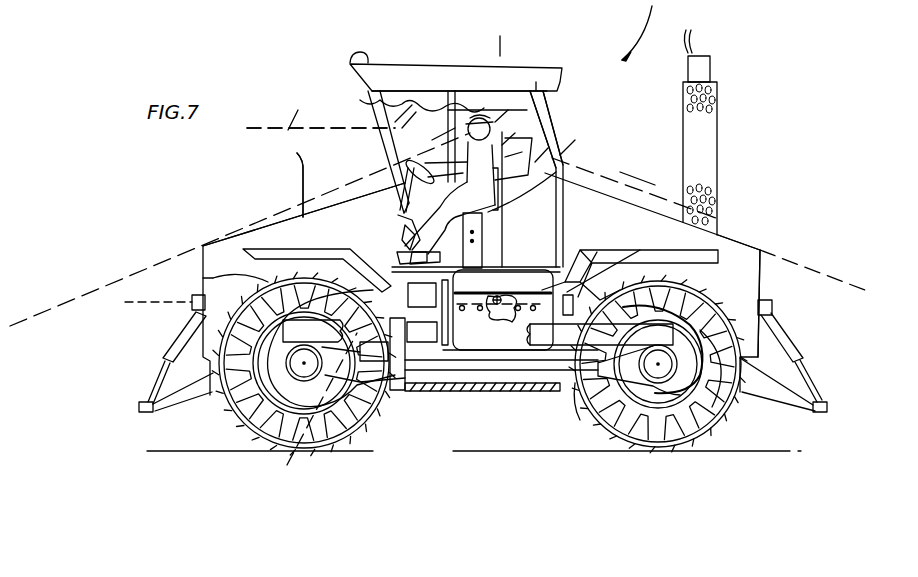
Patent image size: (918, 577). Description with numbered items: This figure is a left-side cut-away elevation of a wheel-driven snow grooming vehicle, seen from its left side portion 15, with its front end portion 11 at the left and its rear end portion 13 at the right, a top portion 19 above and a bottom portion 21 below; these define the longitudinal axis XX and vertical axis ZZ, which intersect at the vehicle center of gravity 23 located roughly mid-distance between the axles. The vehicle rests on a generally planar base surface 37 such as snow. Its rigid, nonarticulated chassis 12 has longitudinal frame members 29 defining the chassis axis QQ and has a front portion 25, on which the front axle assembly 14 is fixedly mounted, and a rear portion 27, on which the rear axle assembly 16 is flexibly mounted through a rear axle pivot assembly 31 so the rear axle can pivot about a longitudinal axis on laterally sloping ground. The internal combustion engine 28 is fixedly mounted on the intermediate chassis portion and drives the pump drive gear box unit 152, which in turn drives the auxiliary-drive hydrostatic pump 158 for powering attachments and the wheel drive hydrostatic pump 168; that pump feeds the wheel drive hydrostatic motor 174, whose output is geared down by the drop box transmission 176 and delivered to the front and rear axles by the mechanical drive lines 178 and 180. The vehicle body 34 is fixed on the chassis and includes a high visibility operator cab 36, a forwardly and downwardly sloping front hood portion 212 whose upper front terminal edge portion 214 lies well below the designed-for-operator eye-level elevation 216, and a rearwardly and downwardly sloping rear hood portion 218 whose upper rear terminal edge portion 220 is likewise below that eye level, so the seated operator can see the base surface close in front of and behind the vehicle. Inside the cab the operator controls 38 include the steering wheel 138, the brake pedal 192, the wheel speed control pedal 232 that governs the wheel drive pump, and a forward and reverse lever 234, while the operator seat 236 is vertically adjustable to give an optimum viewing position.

The front end portion 11 is at (213, 258).
The chassis 12 is at (572, 303).
The rear end portion 13 is at (762, 280).
The front axle assembly 14 is at (303, 328).
The left side portion 15 is at (632, 263).
The rear axle assembly 16 is at (640, 330).
The top portion 19 is at (466, 64).
The bottom portion 21 is at (523, 392).
The vehicle center of gravity 23 is at (490, 302).
The front portion 25 is at (203, 279).
The rear portion 27 is at (712, 407).
The internal combustion engine 28 is at (542, 288).
The longitudinal frame members 29 is at (655, 220).
The rear axle pivot assembly 31 is at (614, 442).
The vehicle body 34 is at (618, 190).
The operator cab 36 is at (541, 115).
The base surface 37 is at (165, 452).
The operator controls 38 is at (418, 150).
The steering wheel 138 is at (412, 172).
The pump drive gear box unit 152 is at (412, 305).
The auxiliary-drive hydrostatic pump 158 is at (463, 264).
The wheel drive hydrostatic pump 168 is at (427, 331).
The wheel drive hydrostatic motor 174 is at (385, 388).
The drop box transmission 176 is at (400, 392).
The mechanical drive line 178 is at (366, 378).
The mechanical drive line 180 is at (548, 365).
The brake pedal 192 is at (402, 242).
The front hood portion 212 is at (297, 153).
The upper front terminal edge portion 214 is at (200, 245).
The designed-for-operator eye-level elevation 216 is at (290, 126).
The rear hood portion 218 is at (720, 236).
The upper rear terminal edge portion 220 is at (752, 248).
The wheel speed control pedal 232 is at (410, 260).
The forward and reverse lever 234 is at (408, 217).
The operator seat 236 is at (548, 182).